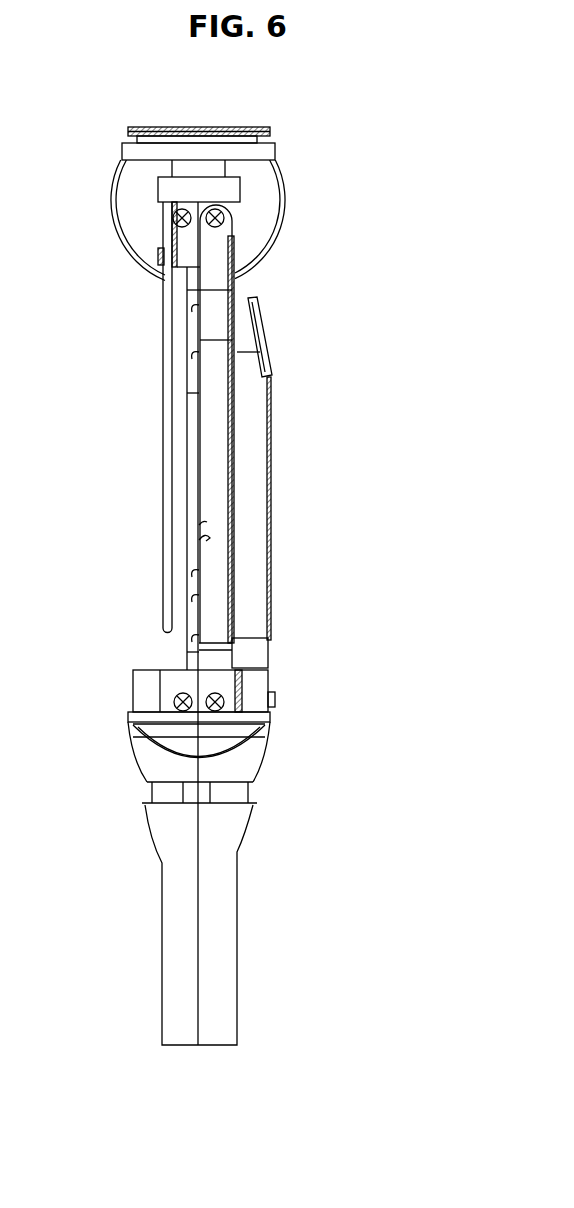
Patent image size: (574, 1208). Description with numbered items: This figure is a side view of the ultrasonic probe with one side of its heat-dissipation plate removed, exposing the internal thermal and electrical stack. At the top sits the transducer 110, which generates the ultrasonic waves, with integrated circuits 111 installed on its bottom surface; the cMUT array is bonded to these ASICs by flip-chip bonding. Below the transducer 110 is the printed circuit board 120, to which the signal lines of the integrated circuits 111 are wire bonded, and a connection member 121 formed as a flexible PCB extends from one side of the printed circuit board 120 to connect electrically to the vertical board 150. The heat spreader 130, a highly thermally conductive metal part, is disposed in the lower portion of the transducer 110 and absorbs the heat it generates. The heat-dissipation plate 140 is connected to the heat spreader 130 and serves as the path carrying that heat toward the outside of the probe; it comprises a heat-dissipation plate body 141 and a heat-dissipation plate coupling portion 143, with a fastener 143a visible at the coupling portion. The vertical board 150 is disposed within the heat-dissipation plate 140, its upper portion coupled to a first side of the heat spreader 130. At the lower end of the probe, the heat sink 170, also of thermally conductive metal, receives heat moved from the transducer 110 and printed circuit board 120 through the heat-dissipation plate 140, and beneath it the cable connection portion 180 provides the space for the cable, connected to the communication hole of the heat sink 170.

The transducer 110 is at (270, 131).
The integrated circuits 111 is at (132, 139).
The printed circuit board 120 is at (273, 149).
The connection member 121 is at (285, 206).
The heat spreader 130 is at (158, 186).
The heat-dissipation plate 140 is at (337, 240).
The heat-dissipation plate body 141 is at (272, 381).
The heat-dissipation plate coupling portion 143 is at (225, 242).
The hinge pin 143a is at (233, 207).
The vertical board 150 is at (152, 487).
The heat sink 170 is at (253, 767).
The cable connection portion 180 is at (235, 847).